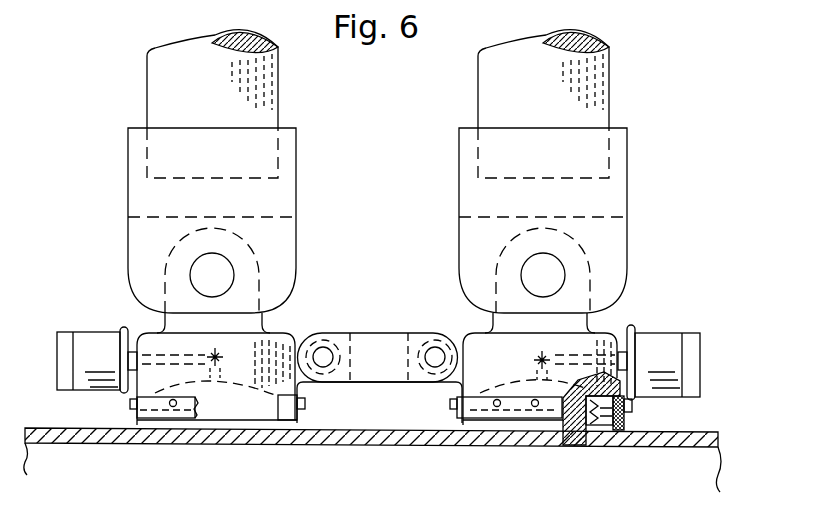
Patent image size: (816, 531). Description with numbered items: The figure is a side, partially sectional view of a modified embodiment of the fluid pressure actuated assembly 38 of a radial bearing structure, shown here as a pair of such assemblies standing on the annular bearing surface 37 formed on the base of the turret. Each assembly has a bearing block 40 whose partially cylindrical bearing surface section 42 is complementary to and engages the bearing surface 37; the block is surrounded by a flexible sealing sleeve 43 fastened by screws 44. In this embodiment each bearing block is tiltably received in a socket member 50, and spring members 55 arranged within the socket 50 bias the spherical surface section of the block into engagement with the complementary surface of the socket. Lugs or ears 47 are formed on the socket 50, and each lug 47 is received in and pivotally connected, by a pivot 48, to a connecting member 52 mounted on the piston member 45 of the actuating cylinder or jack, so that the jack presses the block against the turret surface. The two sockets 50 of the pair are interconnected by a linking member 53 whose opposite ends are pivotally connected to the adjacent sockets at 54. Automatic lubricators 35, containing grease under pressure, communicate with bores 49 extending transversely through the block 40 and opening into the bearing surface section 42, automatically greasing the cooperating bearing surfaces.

The automatic lubricator 35 is at (104, 386).
The bearing surface 37 is at (676, 440).
The assembly 38 is at (128, 198).
The bearing block 40 is at (230, 420).
The bearing surface section 42 is at (568, 440).
The sealing sleeve 43 is at (622, 428).
The screws 44 is at (300, 404).
The piston member 45 is at (268, 80).
The lug 47 is at (258, 322).
The pivot 48 is at (230, 277).
The bore 49 is at (143, 330).
The socket member 50 is at (283, 332).
The connecting member 52 is at (296, 183).
The linking member 53 is at (381, 378).
The pivotal connection 54 is at (327, 351).
The spring member 55 is at (578, 437).